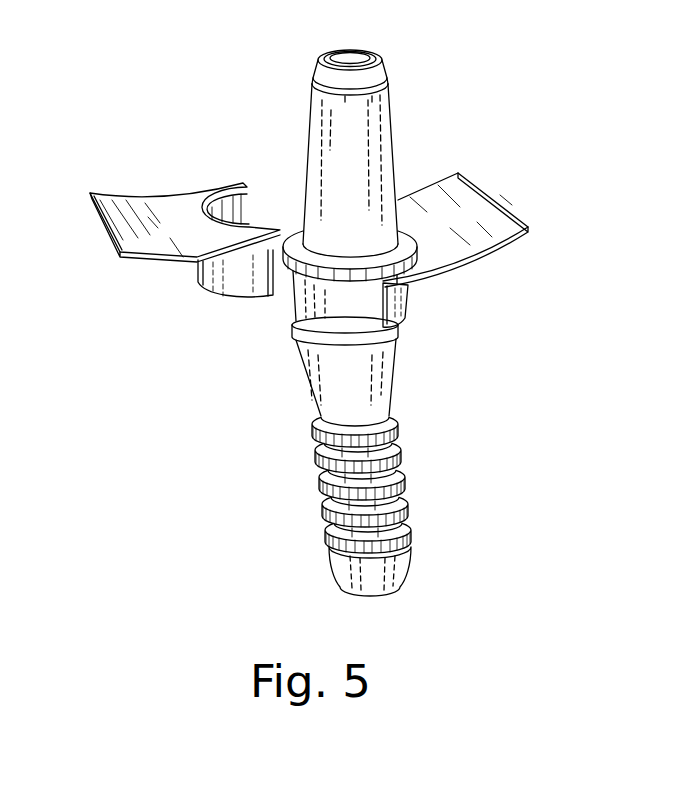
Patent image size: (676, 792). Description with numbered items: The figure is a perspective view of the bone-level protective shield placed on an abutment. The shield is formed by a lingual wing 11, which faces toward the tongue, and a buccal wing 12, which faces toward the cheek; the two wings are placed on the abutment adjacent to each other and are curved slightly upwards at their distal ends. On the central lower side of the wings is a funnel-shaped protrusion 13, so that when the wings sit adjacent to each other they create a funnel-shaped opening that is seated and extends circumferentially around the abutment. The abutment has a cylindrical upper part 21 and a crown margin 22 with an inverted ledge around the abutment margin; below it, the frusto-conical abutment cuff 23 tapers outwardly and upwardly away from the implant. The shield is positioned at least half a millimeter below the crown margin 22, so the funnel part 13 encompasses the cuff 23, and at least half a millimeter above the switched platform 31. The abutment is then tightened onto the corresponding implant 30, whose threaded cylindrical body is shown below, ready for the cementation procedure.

The lingual wing 11 is at (470, 215).
The buccal wing 12 is at (147, 222).
The funnel-shaped protrusion 13 is at (218, 270).
The upper part of abutment 21 is at (360, 134).
The crown margin 22 is at (325, 277).
The abutment cuff 23 is at (337, 303).
The implant 30 is at (405, 482).
The switched platform 31 is at (296, 329).